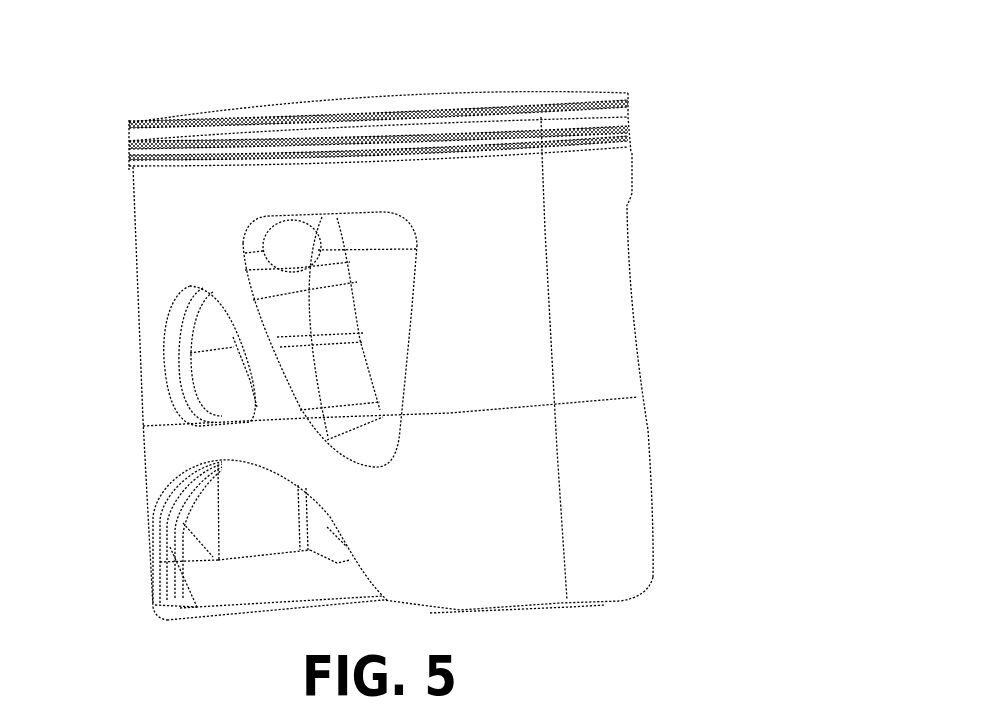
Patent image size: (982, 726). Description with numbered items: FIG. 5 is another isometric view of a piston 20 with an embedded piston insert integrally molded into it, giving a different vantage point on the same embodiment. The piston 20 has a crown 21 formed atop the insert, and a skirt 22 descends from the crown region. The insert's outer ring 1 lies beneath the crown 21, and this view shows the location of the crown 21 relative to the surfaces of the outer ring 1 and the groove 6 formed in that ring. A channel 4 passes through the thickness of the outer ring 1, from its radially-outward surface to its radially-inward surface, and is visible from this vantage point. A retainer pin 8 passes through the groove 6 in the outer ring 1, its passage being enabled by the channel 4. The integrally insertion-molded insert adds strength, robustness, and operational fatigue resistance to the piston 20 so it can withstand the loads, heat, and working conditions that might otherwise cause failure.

The outer ring 1 is at (372, 184).
The crown 21 is at (276, 96).
The channel 4 is at (551, 110).
The groove 6 is at (119, 158).
The retainer pin 8 is at (550, 160).
The piston 20 is at (495, 400).
The skirt 22 is at (598, 548).